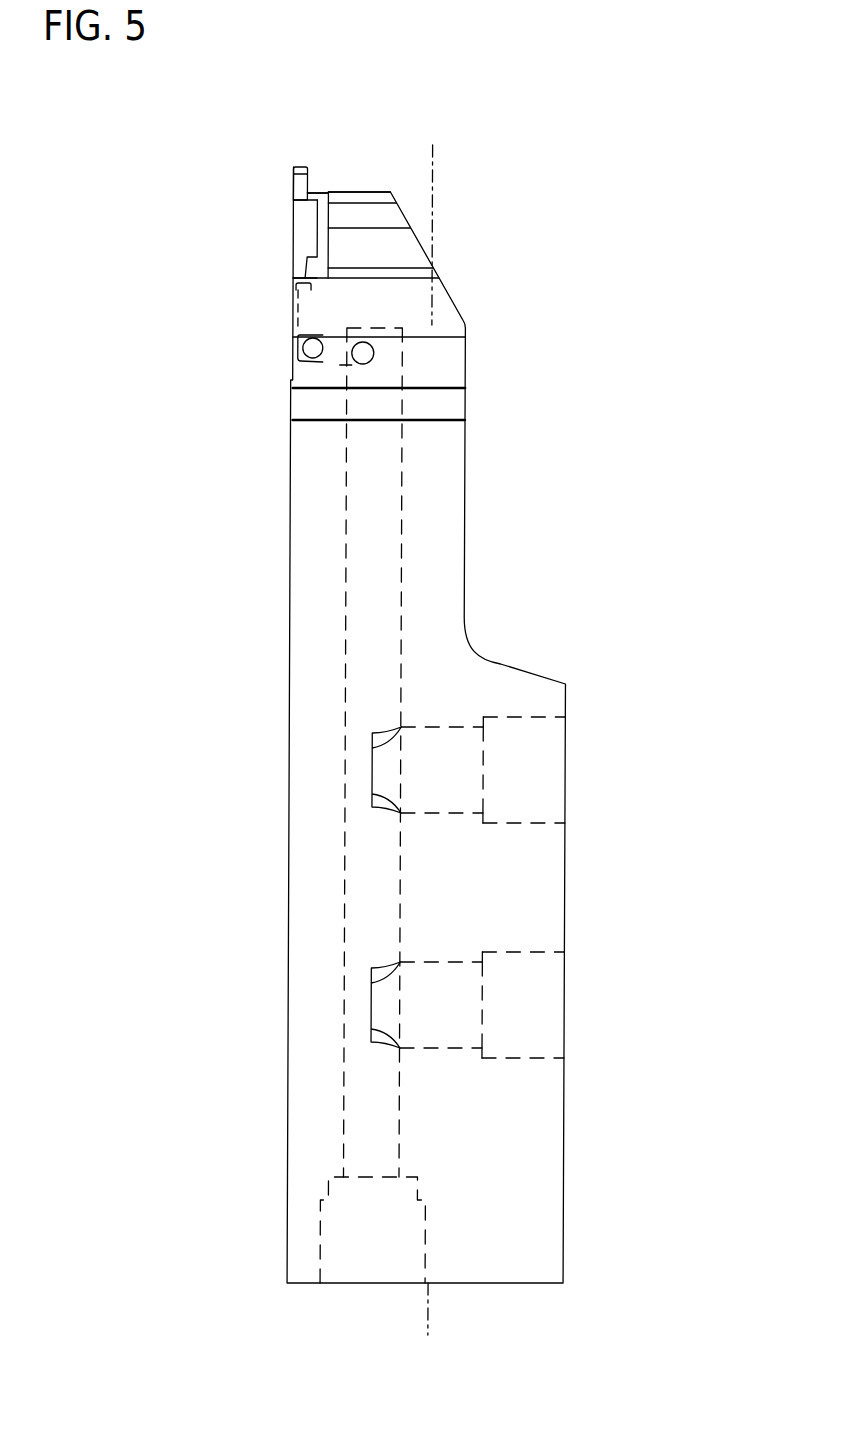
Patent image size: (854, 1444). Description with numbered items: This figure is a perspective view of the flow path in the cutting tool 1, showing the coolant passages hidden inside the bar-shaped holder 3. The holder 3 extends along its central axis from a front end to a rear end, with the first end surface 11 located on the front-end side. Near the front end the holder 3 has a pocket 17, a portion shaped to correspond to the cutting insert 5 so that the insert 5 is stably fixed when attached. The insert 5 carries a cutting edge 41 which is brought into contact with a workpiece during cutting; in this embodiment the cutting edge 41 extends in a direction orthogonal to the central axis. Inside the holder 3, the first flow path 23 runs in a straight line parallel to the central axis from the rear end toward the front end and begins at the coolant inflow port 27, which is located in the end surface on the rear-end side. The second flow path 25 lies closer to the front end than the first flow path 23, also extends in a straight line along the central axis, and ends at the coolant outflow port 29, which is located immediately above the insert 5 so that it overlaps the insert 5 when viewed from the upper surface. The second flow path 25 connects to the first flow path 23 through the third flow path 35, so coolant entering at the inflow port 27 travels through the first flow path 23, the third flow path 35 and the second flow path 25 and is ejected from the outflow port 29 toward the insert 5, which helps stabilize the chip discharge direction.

The cutting tool 1 is at (512, 183).
The holder 3 is at (373, 191).
The cutting insert 5 is at (302, 217).
The first end surface 11 is at (348, 191).
The pocket 17 is at (327, 238).
The first flow path 23 is at (343, 868).
The second flow path 25 is at (293, 317).
The coolant inflow port 27 is at (337, 1283).
The coolant outflow port 29 is at (295, 287).
The third flow path 35 is at (325, 360).
The cutting edge 41 is at (297, 165).